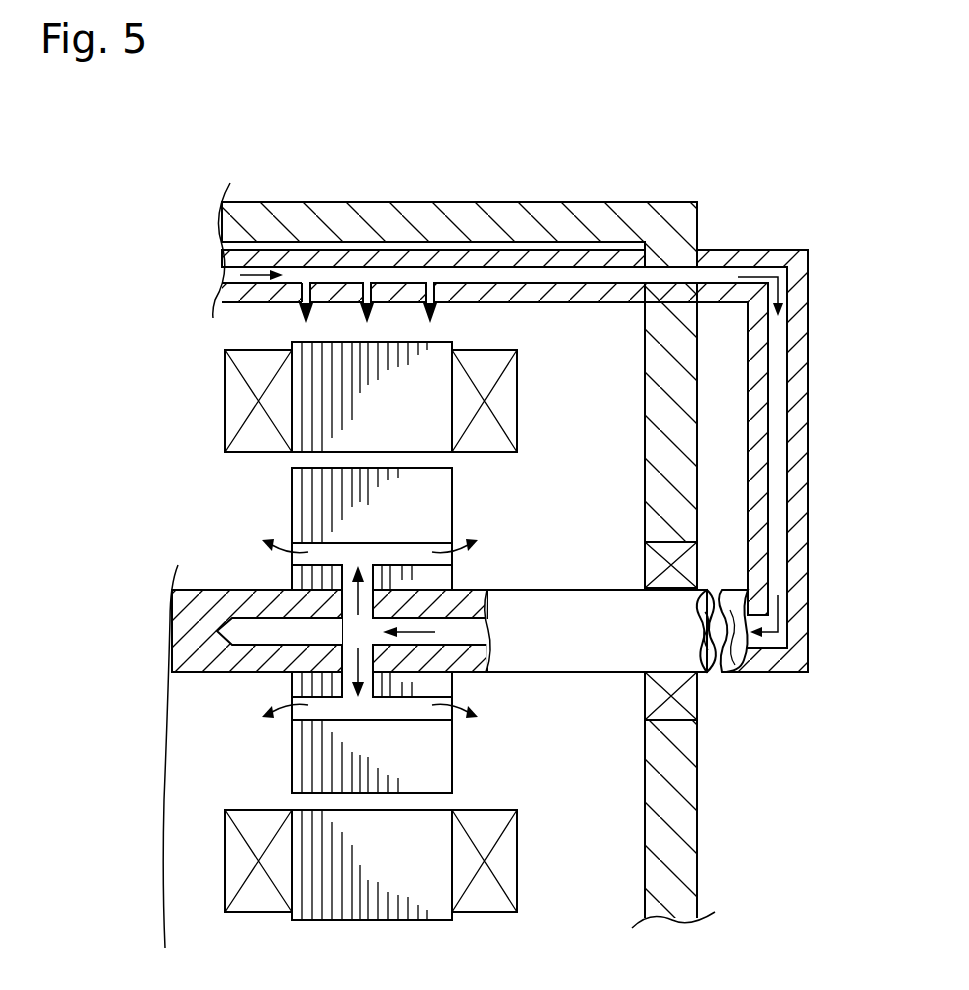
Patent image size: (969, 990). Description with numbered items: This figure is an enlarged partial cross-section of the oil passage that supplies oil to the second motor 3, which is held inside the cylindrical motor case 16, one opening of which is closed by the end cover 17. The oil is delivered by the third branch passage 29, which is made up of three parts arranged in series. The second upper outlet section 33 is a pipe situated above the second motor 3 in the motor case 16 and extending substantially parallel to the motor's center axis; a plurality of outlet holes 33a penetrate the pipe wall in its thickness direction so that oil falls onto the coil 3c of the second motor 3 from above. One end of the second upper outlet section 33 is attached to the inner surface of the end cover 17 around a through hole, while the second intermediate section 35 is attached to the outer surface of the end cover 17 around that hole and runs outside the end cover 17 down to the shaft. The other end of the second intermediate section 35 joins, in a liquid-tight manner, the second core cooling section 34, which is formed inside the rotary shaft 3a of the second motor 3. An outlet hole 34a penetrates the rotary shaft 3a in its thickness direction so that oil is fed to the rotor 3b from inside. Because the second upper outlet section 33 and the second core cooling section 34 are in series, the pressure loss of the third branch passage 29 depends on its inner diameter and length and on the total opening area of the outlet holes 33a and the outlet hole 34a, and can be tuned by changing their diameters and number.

The second motor 3 is at (324, 628).
The rotary shaft 3a is at (588, 660).
The rotor 3b is at (440, 492).
The coil 3c is at (225, 432).
The motor case 16 is at (537, 220).
The end cover 17 is at (682, 226).
The third branch passage 29 is at (815, 340).
The second upper outlet section 33 is at (452, 258).
The outlet holes 33a is at (366, 290).
The second core cooling section 34 is at (466, 642).
The outlet hole 34a is at (346, 600).
The second intermediate section 35 is at (800, 448).